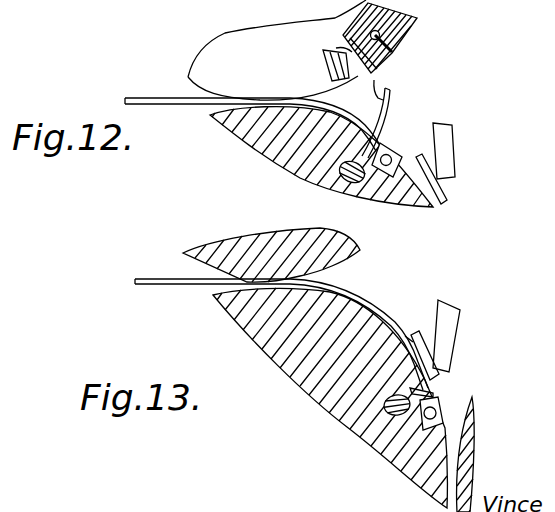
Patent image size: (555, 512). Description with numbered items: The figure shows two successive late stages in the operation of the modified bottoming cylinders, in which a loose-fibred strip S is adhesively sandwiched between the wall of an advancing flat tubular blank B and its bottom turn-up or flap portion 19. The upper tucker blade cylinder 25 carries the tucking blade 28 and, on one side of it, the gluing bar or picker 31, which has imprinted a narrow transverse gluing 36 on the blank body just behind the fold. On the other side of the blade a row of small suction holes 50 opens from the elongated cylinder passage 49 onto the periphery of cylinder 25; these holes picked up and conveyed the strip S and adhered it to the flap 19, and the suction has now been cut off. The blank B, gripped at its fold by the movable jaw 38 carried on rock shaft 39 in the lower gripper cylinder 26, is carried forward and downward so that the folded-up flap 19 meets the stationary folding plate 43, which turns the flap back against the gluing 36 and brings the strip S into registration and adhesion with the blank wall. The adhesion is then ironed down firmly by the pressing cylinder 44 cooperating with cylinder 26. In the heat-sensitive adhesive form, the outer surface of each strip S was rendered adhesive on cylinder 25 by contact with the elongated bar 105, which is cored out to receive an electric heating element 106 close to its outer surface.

In FIG. 12, the blank B is at (161, 97).
In FIG. 13, the blank B is at (145, 278).
In FIG. 12, the tucker blade cylinder 25 is at (248, 40).
In FIG. 13, the tucker blade cylinder 25 is at (257, 252).
In FIG. 12, the gripper cylinder 26 is at (275, 147).
In FIG. 13, the gripper cylinder 26 is at (300, 368).
In FIG. 12, the tucking blade 28 is at (336, 48).
In FIG. 12, the gluing bar or picker 31 is at (326, 67).
In FIG. 12, the transverse glue imprint 36 is at (356, 112).
In FIG. 13, the movable jaw 38 is at (409, 338).
In FIG. 12, the rock shaft 39 is at (356, 183).
In FIG. 13, the rock shaft 39 is at (385, 416).
In FIG. 12, the stationary folding plate 43 is at (452, 170).
In FIG. 13, the stationary folding plate 43 is at (445, 342).
In FIG. 13, the pressing cylinder 44 is at (474, 406).
In FIG. 12, the cylinder passage 49 is at (385, 25).
In FIG. 12, the suction holes 50 is at (392, 52).
In FIG. 12, the loose-fibred strip S is at (386, 81).
In FIG. 12, the bottom turn-up or flap portion 19 is at (392, 92).
In FIG. 13, the bottom turn-up or flap portion 19 is at (416, 333).
In FIG. 12, the elongated bar 105 is at (393, 148).
In FIG. 13, the elongated bar 105 is at (438, 397).
In FIG. 12, the electric heating element 106 is at (392, 151).
In FIG. 13, the electric heating element 106 is at (438, 402).